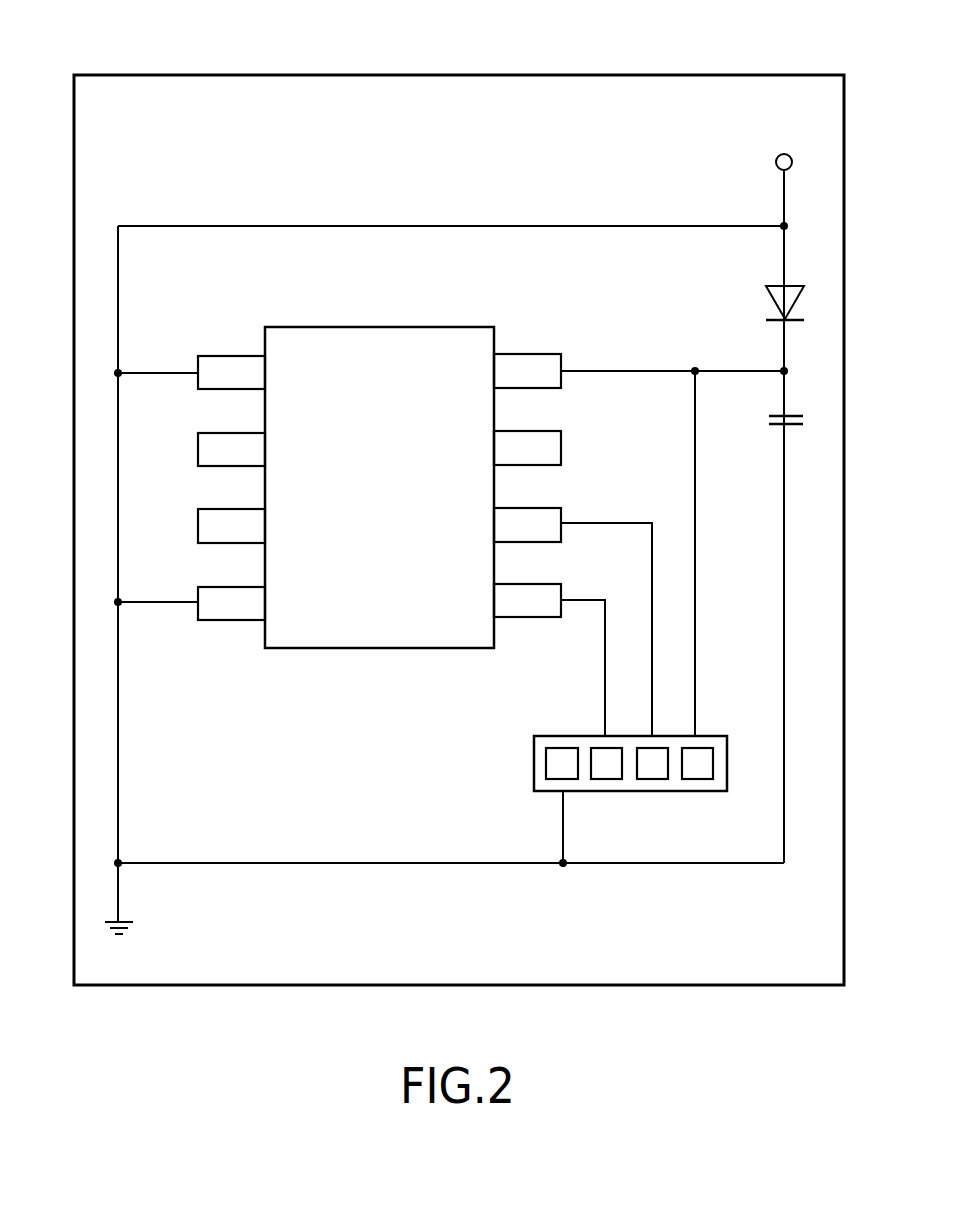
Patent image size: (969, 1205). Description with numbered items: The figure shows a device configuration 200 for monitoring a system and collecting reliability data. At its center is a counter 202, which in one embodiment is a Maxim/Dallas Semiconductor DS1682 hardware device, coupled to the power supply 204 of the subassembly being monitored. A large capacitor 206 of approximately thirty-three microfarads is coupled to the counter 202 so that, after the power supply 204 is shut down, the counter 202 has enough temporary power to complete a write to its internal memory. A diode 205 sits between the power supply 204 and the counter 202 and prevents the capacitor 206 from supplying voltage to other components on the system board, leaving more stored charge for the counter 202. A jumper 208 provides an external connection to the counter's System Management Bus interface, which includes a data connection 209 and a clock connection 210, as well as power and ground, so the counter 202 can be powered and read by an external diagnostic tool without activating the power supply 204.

The device configuration 200 is at (713, 74).
The counter 202 is at (380, 326).
The power supply 204 is at (776, 162).
The diode 205 is at (767, 298).
The capacitor 206 is at (770, 424).
The jumper 208 is at (534, 762).
The data connection 209 is at (551, 507).
The clock connection 210 is at (540, 618).